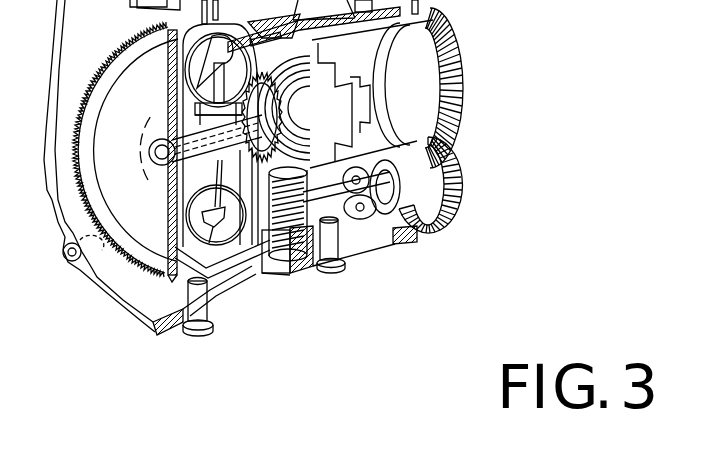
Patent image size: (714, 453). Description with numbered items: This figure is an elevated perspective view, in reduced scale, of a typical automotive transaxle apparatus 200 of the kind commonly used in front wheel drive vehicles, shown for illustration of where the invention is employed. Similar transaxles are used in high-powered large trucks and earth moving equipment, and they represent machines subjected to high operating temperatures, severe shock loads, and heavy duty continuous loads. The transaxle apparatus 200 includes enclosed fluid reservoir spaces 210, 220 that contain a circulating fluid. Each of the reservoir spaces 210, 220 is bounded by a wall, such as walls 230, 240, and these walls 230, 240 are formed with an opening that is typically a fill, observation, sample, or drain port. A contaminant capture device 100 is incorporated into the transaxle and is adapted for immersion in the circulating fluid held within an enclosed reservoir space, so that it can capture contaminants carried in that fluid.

The transaxle apparatus 200 is at (494, 105).
The reservoir space 210 is at (152, 302).
The reservoir space 220 is at (369, 249).
The wall 230 is at (167, 335).
The wall 240 is at (342, 237).
The contaminant capture device 100 is at (229, 310).